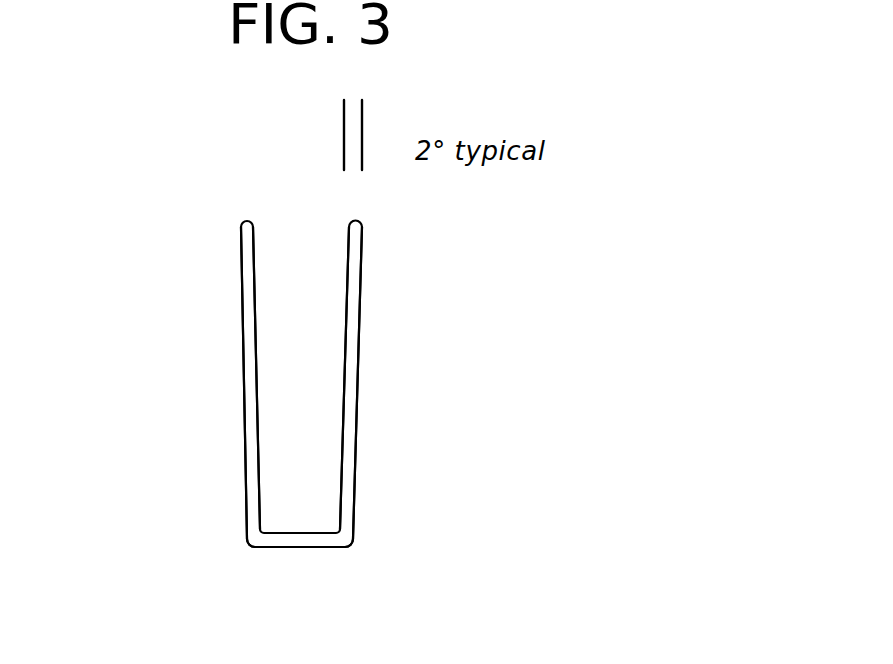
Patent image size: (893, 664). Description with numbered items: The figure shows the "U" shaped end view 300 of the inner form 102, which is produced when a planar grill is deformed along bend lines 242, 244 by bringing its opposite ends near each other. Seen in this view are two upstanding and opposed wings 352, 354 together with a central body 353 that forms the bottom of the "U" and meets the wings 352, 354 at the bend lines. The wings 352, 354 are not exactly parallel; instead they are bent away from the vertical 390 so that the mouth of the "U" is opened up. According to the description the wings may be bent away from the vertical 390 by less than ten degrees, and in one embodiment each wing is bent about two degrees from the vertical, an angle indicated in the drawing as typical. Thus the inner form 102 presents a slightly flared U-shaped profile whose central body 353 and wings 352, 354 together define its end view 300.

The "U" shaped end view 300 is at (626, 239).
The inner form 102 is at (392, 279).
The vertical 390 is at (400, 136).
The wing 352 is at (360, 382).
The wing 354 is at (243, 397).
The bend line 244 is at (247, 533).
The bend line 242 is at (345, 536).
The central body 353 is at (310, 548).